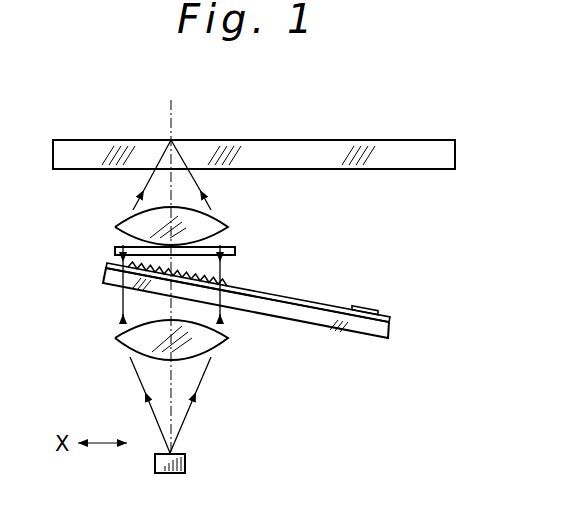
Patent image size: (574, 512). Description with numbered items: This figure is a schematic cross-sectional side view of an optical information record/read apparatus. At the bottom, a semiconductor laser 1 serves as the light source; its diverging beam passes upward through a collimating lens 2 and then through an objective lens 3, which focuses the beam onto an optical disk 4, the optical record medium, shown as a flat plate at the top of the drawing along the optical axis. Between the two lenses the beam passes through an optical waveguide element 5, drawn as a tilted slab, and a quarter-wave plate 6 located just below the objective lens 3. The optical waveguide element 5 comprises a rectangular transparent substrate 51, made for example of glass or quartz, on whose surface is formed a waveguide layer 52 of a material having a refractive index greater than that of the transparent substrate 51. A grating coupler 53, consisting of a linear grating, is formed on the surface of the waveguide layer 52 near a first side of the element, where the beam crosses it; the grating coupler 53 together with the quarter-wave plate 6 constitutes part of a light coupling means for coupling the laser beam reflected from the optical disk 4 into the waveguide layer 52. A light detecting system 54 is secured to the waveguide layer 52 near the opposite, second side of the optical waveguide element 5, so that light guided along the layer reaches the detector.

The semiconductor laser 1 is at (185, 463).
The collimating lens 2 is at (228, 340).
The objective lens 3 is at (228, 226).
The optical disk 4 is at (425, 146).
The optical waveguide element 5 is at (272, 308).
The quarter-wave plate 6 is at (189, 239).
The transparent substrate 51 is at (321, 318).
The waveguide layer 52 is at (309, 302).
The grating coupler 53 is at (224, 268).
The light detecting system 54 is at (362, 307).